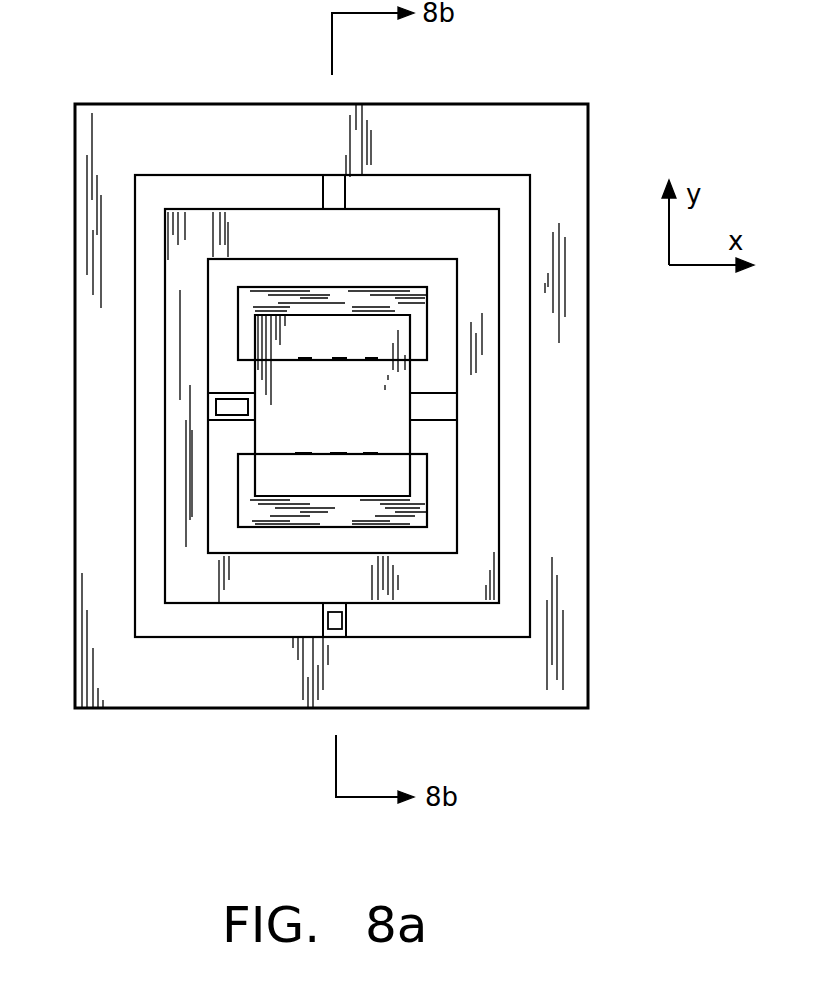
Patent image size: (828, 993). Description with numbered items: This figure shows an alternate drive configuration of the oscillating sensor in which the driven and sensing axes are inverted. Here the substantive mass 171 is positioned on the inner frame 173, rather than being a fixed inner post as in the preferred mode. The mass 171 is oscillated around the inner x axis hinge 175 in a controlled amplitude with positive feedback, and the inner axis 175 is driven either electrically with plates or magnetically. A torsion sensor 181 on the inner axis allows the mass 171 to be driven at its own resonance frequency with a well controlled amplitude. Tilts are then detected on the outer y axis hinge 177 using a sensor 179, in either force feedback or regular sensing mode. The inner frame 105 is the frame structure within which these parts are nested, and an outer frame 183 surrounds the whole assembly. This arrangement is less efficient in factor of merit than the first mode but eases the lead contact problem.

The inner frame 105 is at (276, 288).
The substantive mass 171 is at (354, 391).
The inner frame 173 is at (482, 415).
The inner x axis hinge 175 is at (433, 408).
The outer y axis hinge 177 is at (337, 196).
The sensor 179 is at (328, 620).
The torsion sensor 181 is at (232, 408).
The outer frame 183 is at (558, 533).